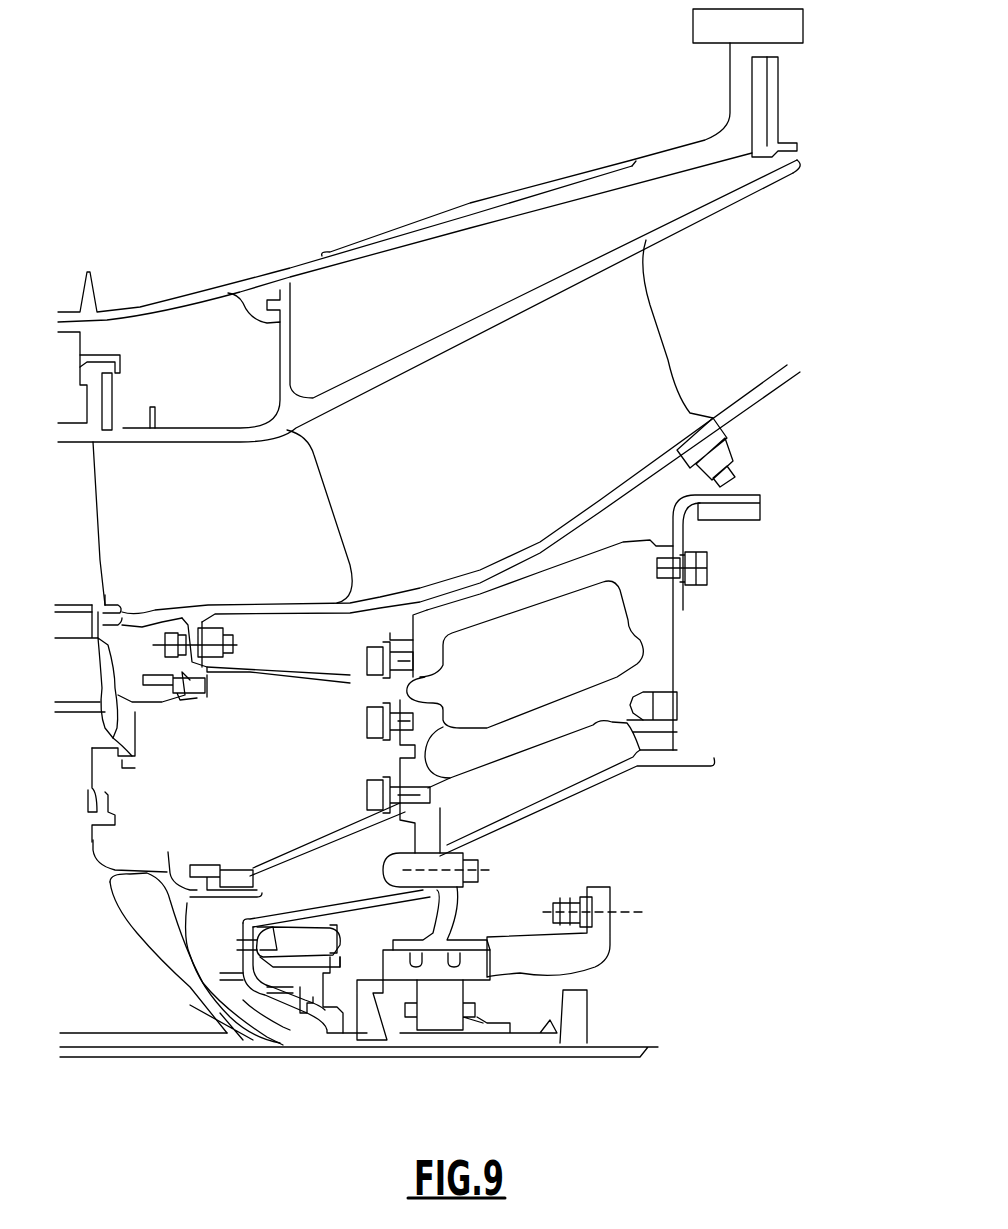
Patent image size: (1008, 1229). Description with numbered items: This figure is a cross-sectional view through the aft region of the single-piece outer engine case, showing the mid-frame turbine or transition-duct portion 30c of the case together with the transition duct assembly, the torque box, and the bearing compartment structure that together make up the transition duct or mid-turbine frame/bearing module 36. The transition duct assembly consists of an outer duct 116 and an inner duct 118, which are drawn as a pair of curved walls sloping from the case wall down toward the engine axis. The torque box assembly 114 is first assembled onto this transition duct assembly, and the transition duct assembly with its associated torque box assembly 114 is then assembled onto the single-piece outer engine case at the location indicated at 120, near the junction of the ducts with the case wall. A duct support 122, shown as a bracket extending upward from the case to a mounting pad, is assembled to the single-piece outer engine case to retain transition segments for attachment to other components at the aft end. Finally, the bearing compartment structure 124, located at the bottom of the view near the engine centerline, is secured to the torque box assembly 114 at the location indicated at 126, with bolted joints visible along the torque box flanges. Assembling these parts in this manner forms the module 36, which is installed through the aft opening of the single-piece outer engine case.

The mid-frame turbine or transition-duct portion 30c is at (565, 190).
The transition duct or mid-turbine frame/bearing module 36 is at (817, 262).
The torque box assembly 114 is at (676, 623).
The outer duct 116 is at (458, 346).
The inner duct 118 is at (399, 602).
The assembly location of transition duct assembly onto outer engine case 120 is at (320, 303).
The duct support 122 is at (779, 98).
The bearing compartment structure 124 is at (612, 948).
The attachment of bearing compartment structure to torque box assembly 126 is at (722, 726).